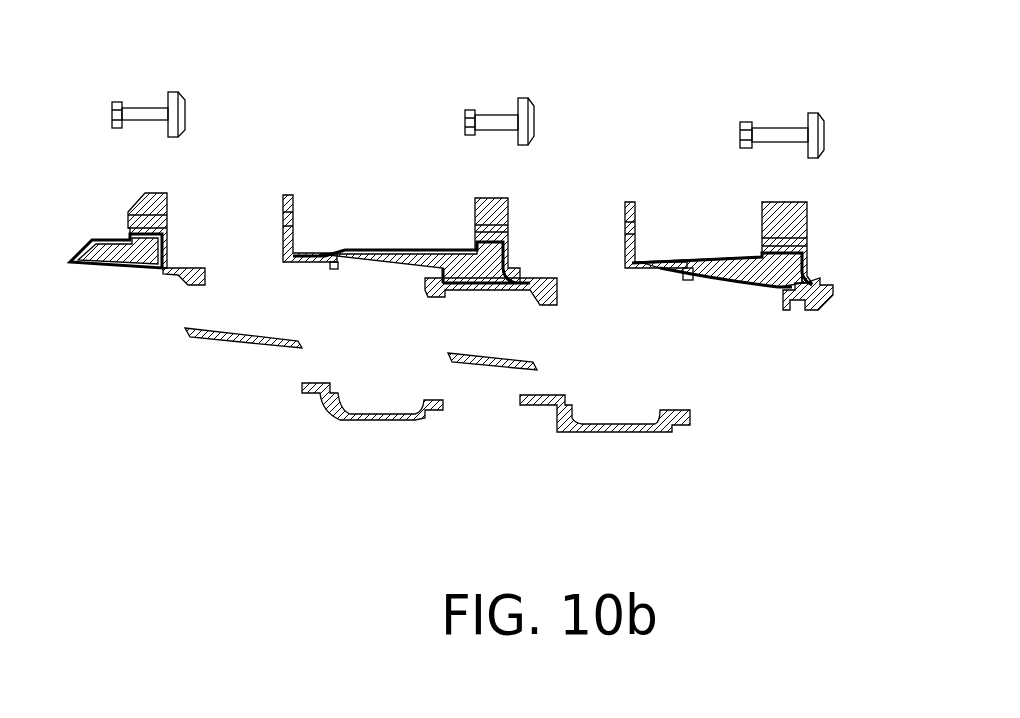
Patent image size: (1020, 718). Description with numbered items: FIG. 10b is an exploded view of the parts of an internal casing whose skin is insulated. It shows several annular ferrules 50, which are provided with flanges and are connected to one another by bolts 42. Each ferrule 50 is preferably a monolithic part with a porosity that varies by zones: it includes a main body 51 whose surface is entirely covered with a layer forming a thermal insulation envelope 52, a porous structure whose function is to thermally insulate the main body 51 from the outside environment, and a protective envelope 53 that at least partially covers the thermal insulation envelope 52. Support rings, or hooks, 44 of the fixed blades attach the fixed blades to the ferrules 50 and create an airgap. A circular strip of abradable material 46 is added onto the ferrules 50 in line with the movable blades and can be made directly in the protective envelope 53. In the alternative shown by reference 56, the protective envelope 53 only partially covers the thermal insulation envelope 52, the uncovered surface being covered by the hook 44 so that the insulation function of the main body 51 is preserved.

The bolt 42 is at (182, 96).
The support ring 44 is at (368, 414).
The layer of abradable material 46 is at (255, 330).
The ferrule 50 is at (103, 233).
The main body 51 is at (143, 262).
The thermal insulation envelope 52 is at (165, 247).
The protective envelope 53 is at (195, 278).
The partial covering alternative 56 is at (442, 272).